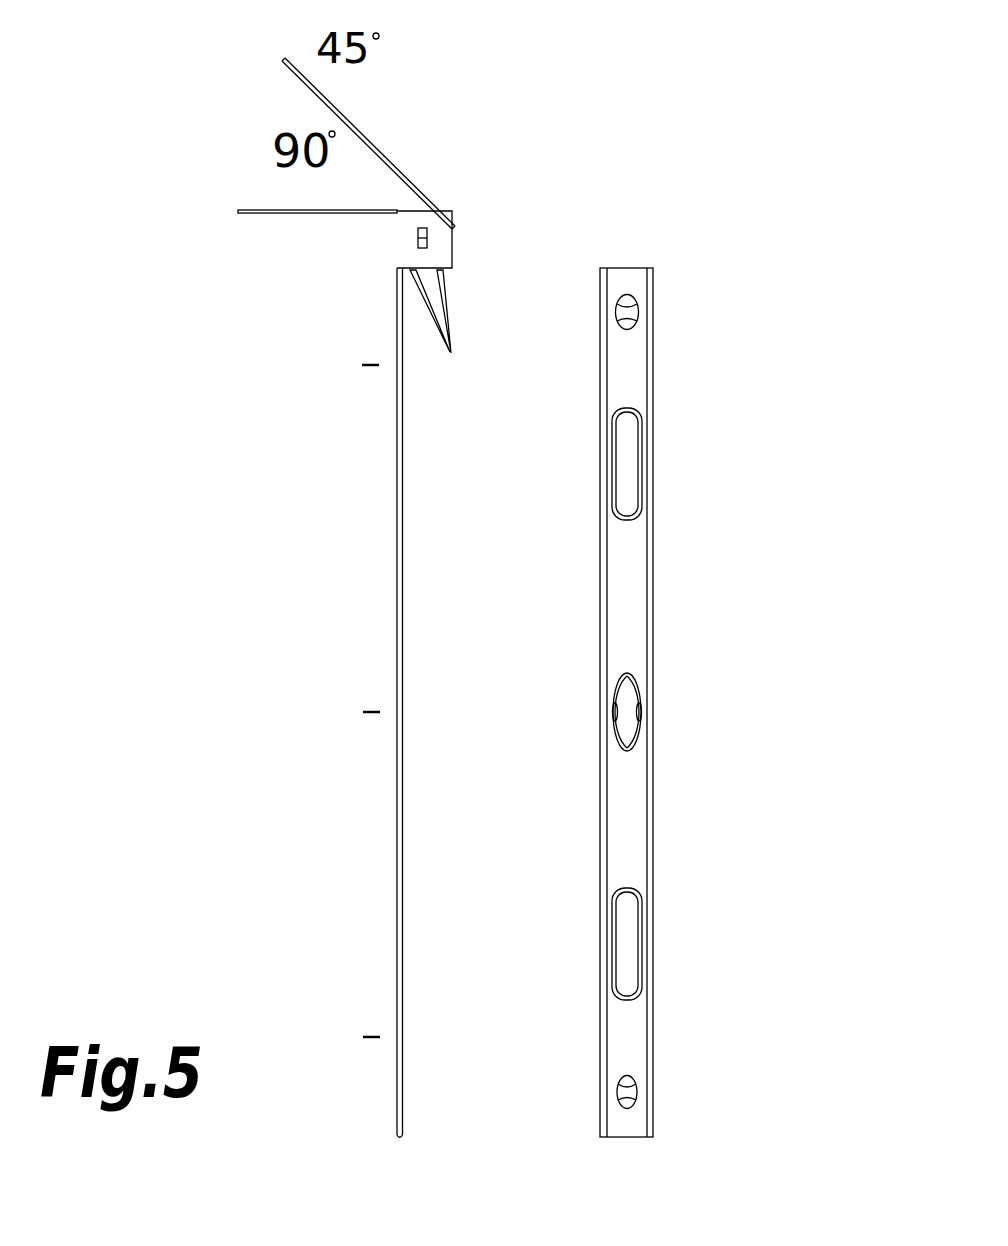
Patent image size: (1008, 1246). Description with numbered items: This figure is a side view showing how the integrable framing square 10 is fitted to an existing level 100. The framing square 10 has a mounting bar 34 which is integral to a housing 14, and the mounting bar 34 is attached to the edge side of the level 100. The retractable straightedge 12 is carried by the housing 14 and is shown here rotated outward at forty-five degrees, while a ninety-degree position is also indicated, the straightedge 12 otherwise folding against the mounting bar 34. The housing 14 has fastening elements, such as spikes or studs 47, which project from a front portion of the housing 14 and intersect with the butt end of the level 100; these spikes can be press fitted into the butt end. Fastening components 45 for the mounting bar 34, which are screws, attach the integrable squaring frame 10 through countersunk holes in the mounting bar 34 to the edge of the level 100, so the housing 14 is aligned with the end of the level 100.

The integrable framing square 10 is at (462, 213).
The retractable straightedge 12 is at (275, 208).
The housing 14 is at (408, 232).
The mounting bar 34 is at (396, 468).
The fastening components for the mounting bar 45 is at (368, 364).
The spikes or studs 47 is at (444, 329).
The level 100 is at (653, 552).